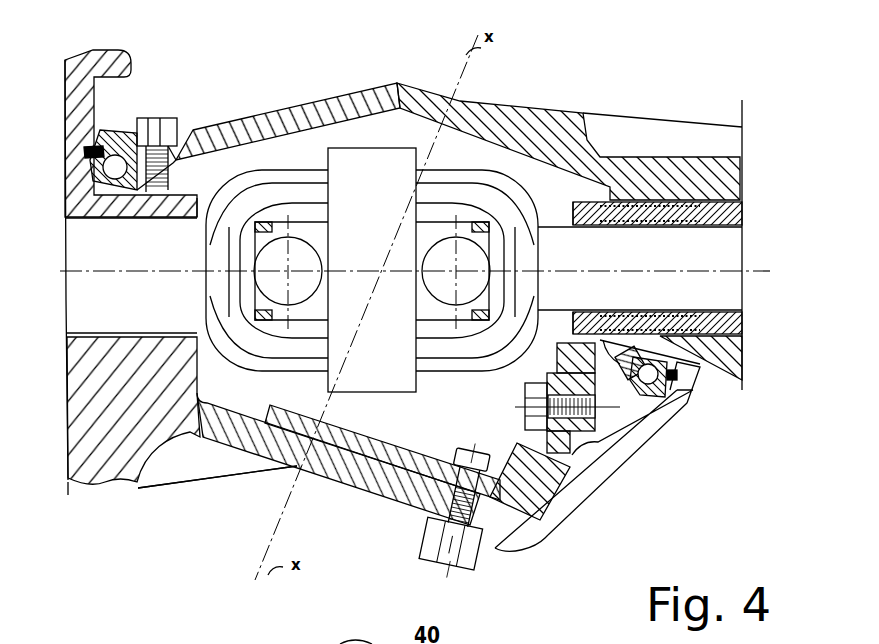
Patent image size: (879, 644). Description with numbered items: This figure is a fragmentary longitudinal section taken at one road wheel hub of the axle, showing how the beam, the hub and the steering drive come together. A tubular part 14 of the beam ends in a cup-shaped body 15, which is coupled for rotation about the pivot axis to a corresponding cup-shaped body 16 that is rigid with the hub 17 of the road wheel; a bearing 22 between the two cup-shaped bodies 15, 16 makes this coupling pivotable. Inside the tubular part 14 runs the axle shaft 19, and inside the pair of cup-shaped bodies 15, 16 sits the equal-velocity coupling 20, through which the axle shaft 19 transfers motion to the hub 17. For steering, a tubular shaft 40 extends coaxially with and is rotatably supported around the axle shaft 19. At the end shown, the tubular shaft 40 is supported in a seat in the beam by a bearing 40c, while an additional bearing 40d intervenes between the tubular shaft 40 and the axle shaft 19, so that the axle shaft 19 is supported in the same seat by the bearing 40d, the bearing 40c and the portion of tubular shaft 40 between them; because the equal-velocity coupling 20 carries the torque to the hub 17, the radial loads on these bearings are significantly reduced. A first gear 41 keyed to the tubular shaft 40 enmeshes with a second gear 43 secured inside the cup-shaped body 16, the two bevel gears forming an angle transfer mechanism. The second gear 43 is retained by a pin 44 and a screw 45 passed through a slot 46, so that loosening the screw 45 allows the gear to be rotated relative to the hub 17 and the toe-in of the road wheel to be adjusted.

The tubular part 14 is at (684, 142).
The cup-shaped body 15 is at (522, 135).
The cup-shaped body 16 is at (537, 523).
The hub 17 is at (104, 457).
The axle shaft 19 is at (679, 300).
The equal-velocity coupling 20 is at (385, 185).
The bearing 22 is at (680, 420).
The tubular shaft 40 is at (733, 215).
The bearing 40c is at (730, 342).
The bearing 40d is at (607, 312).
The first gear 41 is at (605, 448).
The second gear 43 is at (380, 458).
The pin 44 is at (304, 486).
The screw 45 is at (468, 468).
The slot 46 is at (435, 518).